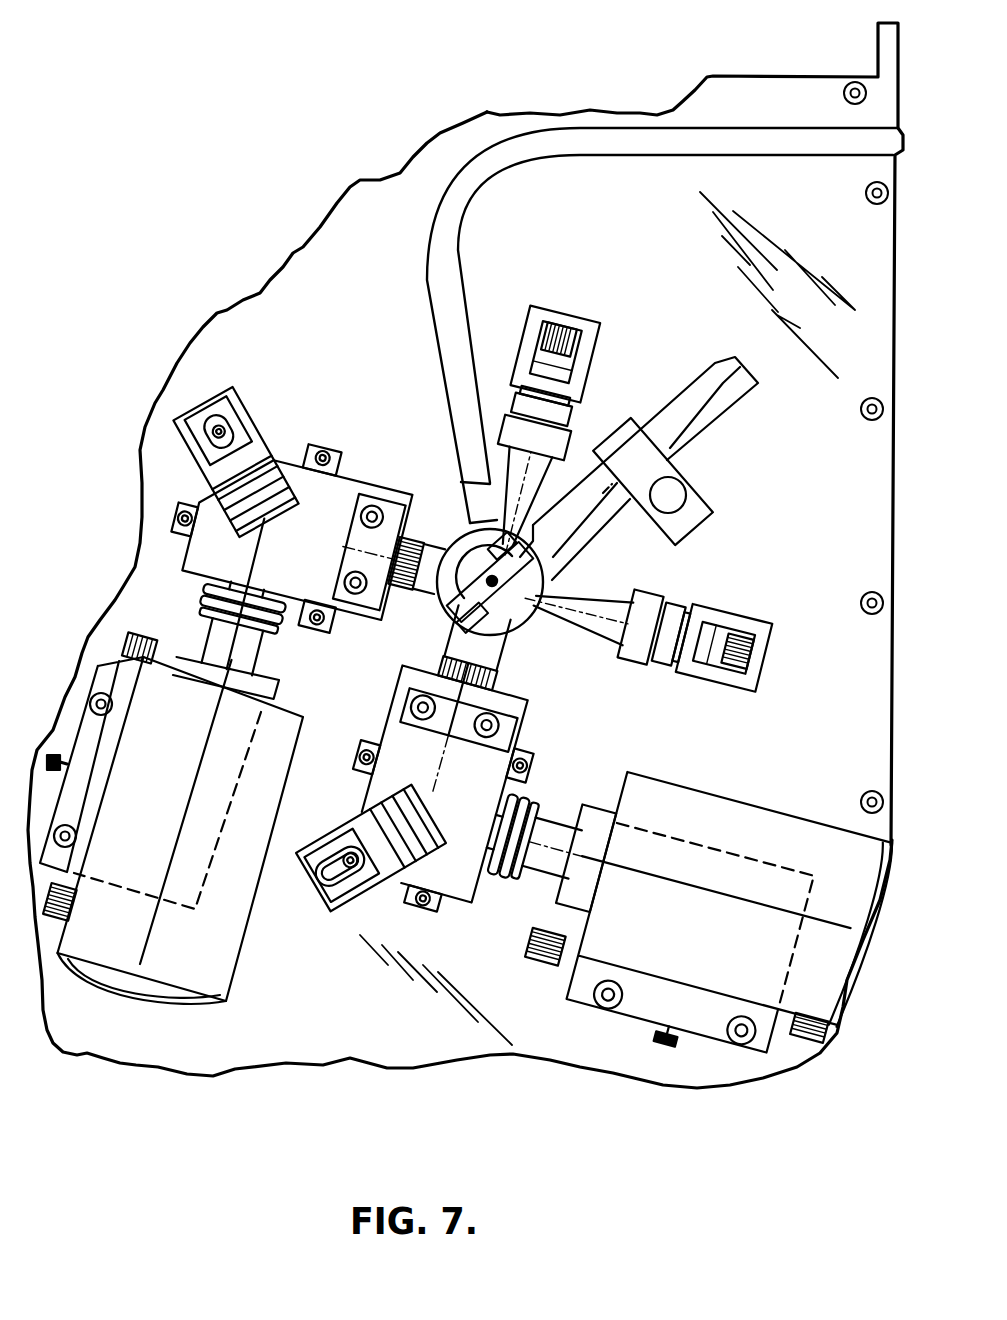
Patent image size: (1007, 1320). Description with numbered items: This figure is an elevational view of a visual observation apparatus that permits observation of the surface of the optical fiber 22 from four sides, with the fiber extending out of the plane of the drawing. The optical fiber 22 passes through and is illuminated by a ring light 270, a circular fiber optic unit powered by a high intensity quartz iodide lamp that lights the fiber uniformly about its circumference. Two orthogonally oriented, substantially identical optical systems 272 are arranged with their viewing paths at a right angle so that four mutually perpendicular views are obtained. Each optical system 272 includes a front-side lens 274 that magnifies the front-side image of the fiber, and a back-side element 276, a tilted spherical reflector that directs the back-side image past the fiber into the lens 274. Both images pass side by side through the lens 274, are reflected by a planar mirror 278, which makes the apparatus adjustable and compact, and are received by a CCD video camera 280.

The optical fiber 22 is at (531, 618).
The ring light 270 is at (460, 548).
The optical system 272 is at (447, 655).
The front-side lens 274 is at (420, 597).
The back-side element 276 is at (660, 588).
The planar mirror 278 is at (233, 387).
The CCD video camera 280 is at (240, 952).